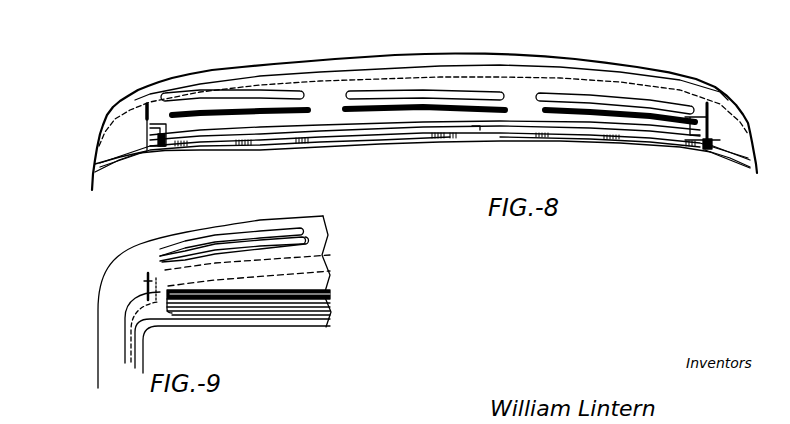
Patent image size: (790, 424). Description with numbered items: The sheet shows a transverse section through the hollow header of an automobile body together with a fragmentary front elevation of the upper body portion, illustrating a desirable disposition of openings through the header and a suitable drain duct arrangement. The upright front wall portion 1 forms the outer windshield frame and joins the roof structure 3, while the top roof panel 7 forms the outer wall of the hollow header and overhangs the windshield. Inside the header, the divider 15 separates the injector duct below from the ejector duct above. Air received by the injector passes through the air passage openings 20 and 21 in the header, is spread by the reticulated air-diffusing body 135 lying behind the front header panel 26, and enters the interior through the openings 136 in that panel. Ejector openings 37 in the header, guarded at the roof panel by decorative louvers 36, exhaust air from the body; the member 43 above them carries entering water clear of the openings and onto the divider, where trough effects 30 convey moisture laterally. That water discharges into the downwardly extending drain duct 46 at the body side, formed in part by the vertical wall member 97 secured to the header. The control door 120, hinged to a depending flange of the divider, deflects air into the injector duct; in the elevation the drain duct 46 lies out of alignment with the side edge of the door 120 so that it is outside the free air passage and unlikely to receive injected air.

In FIG. 9, the body front wall portion 1 is at (125, 358).
In FIG. 8, the roof structure 3 is at (362, 55).
In FIG. 8, the top roof panel 7 is at (313, 72).
In FIG. 9, the top roof panel 7 is at (318, 263).
In FIG. 8, the divider 15 is at (523, 110).
In FIG. 9, the divider 15 is at (300, 232).
In FIG. 8, the air passage openings 20 is at (273, 130).
In FIG. 8, the air passage openings 21 is at (205, 143).
In FIG. 8, the front header panel 26 is at (135, 168).
In FIG. 9, the trough effects 30 is at (300, 280).
In FIG. 8, the decorative louvers 36 is at (218, 82).
In FIG. 9, the decorative louvers 36 is at (208, 238).
In FIG. 8, the ejector openings 37 is at (586, 103).
In FIG. 8, the member above the doors 43 is at (474, 92).
In FIG. 8, the drain duct 46 is at (150, 143).
In FIG. 9, the drain duct 46 is at (145, 290).
In FIG. 8, the vertical wall member 97 is at (145, 128).
In FIG. 9, the control door 120 is at (278, 306).
In FIG. 8, the air-diffusing body 135 is at (326, 140).
In FIG. 8, the openings 136 is at (568, 143).